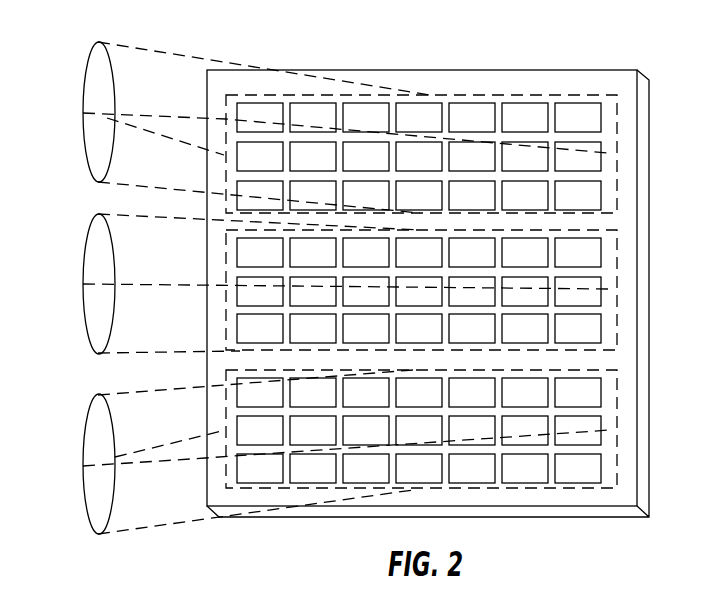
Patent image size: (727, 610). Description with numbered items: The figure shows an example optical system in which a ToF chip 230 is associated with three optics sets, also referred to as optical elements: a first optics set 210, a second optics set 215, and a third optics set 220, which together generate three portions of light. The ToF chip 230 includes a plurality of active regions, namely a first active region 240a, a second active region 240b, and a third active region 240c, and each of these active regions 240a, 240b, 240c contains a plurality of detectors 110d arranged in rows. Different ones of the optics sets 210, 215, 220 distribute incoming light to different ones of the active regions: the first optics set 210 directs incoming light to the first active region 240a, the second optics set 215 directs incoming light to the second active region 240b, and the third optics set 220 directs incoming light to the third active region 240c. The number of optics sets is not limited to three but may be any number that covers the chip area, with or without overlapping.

The detectors 110d is at (419, 293).
The first optics set 210 is at (84, 77).
The second optics set 215 is at (84, 247).
The third optics set 220 is at (84, 432).
The ToF chip 230 is at (452, 70).
The first active region 240a is at (617, 130).
The second active region 240b is at (617, 245).
The third active region 240c is at (617, 400).